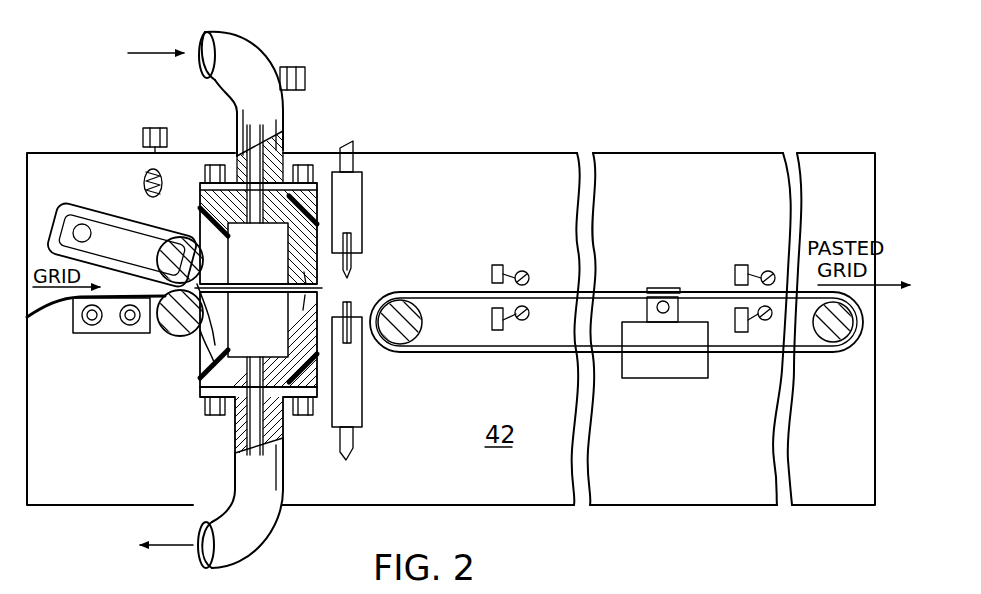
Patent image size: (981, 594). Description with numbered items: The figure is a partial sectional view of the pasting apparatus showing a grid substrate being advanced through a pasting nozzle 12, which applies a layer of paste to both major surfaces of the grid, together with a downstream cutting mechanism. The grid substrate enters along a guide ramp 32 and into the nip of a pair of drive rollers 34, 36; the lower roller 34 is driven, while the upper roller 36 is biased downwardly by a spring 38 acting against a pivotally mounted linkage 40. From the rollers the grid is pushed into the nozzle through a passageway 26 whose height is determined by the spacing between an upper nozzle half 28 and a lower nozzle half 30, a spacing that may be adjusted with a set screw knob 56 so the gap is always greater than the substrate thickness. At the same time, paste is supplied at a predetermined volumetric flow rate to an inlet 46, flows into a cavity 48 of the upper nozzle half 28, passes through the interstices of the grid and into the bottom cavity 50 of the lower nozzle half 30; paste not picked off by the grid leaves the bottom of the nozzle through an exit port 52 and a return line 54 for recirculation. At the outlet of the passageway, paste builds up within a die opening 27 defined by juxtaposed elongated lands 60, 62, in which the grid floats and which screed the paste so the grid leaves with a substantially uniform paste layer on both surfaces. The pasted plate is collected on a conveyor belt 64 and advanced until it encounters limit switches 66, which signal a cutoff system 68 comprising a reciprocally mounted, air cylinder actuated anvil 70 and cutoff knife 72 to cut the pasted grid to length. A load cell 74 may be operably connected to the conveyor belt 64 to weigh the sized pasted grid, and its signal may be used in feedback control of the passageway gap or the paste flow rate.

The pasting nozzle 12 is at (192, 220).
The passageway 26 is at (200, 364).
The die opening 27 is at (275, 287).
The upper nozzle half 28 is at (318, 240).
The lower nozzle half 30 is at (300, 342).
The guide ramp 32 is at (43, 305).
The drive roller 34 is at (181, 331).
The drive roller 36 is at (166, 254).
The spring 38 is at (144, 184).
The pivotally mounted linkage 40 is at (82, 224).
The inlet 46 is at (257, 185).
The cavity 48 is at (262, 273).
The bottom cavity 50 is at (262, 320).
The exit port 52 is at (267, 377).
The line 54 is at (258, 525).
The set screw knob 56 is at (290, 70).
The elongated land 60 is at (307, 265).
The elongated land 62 is at (305, 314).
The conveyor belt 64 is at (418, 293).
The limit switch 66 is at (499, 265).
The cutoff system 68 is at (387, 300).
The anvil 70 is at (353, 310).
The cutoff knife 72 is at (352, 272).
The load cell 74 is at (685, 368).